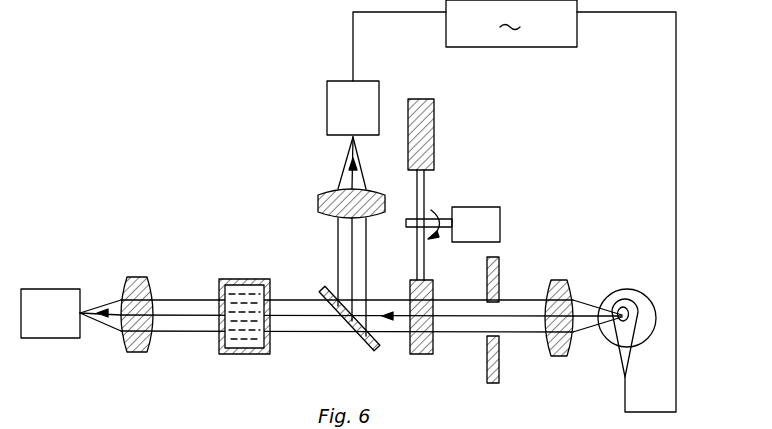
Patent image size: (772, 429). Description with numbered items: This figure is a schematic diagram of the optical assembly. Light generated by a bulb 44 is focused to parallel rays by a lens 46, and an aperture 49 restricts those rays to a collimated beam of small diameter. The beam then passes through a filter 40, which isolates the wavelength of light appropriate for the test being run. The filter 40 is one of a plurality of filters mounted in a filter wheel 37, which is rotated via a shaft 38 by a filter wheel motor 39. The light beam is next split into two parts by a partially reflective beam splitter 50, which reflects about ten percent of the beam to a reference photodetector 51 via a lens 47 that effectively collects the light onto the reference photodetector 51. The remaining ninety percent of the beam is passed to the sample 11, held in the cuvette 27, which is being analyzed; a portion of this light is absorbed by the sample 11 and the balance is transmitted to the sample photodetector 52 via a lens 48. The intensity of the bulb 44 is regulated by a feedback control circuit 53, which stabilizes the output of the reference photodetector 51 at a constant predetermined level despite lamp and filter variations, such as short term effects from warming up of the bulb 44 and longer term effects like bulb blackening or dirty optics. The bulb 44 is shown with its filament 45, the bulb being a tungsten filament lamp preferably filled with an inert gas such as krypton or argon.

The sample 11 is at (233, 279).
The cuvette 27 is at (250, 279).
The filter wheel 37 is at (442, 129).
The shaft 38 is at (428, 212).
The filter wheel motor 39 is at (485, 207).
The filter 40 is at (433, 287).
The bulb 44 is at (627, 290).
The filament 45 is at (630, 308).
The lens 46 is at (556, 282).
The lens 47 is at (320, 198).
The lens 48 is at (135, 277).
The aperture 49 is at (499, 280).
The partially reflective beam splitter 50 is at (354, 340).
The reference photodetector 51 is at (327, 104).
The sample photodetector 52 is at (51, 289).
The feedback control circuit 53 is at (511, 23).